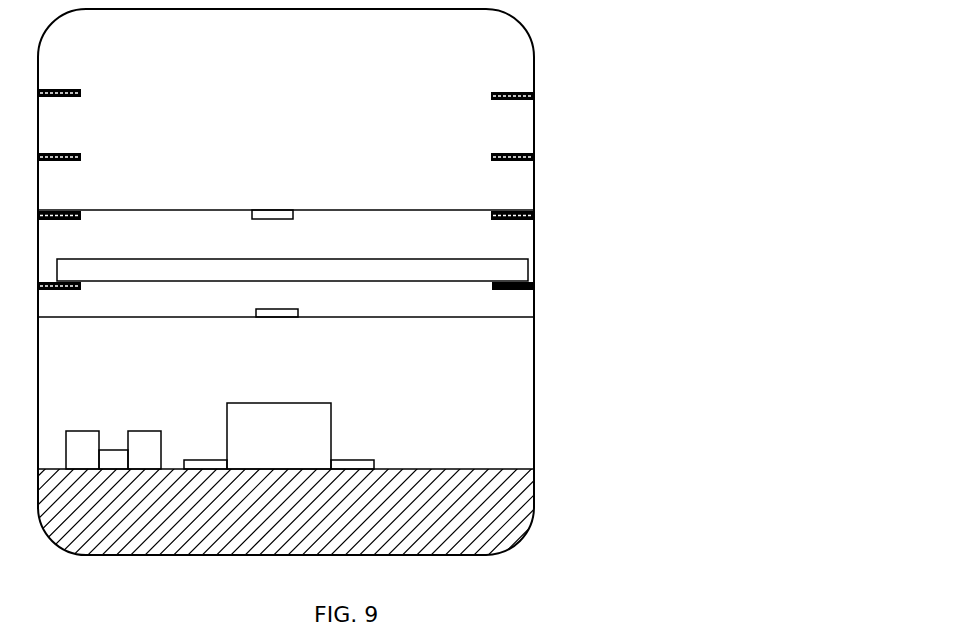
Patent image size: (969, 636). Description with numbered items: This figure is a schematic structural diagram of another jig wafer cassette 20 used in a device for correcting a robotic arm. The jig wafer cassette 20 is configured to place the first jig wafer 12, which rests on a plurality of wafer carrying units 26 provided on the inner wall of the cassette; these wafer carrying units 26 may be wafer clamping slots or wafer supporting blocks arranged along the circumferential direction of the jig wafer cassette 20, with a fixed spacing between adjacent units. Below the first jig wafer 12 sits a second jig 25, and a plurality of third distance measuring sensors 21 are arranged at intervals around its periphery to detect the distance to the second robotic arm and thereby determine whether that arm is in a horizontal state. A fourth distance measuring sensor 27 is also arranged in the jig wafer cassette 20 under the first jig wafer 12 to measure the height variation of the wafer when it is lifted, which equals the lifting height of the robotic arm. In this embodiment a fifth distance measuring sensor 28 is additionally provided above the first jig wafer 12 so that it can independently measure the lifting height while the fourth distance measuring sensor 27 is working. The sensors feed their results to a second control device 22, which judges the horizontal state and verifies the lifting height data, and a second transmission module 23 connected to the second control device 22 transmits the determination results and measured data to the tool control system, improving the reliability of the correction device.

The jig wafer cassette 20 is at (535, 79).
The first jig wafer 12 is at (529, 262).
The wafer carrying units 26 is at (535, 286).
The fifth distance measuring sensor 28 is at (294, 216).
The fourth distance measuring sensor 27 is at (300, 316).
The third distance measuring sensors 21 is at (375, 468).
The second jig 25 is at (332, 421).
The second transmission module 23 is at (83, 431).
The second control device 22 is at (145, 431).